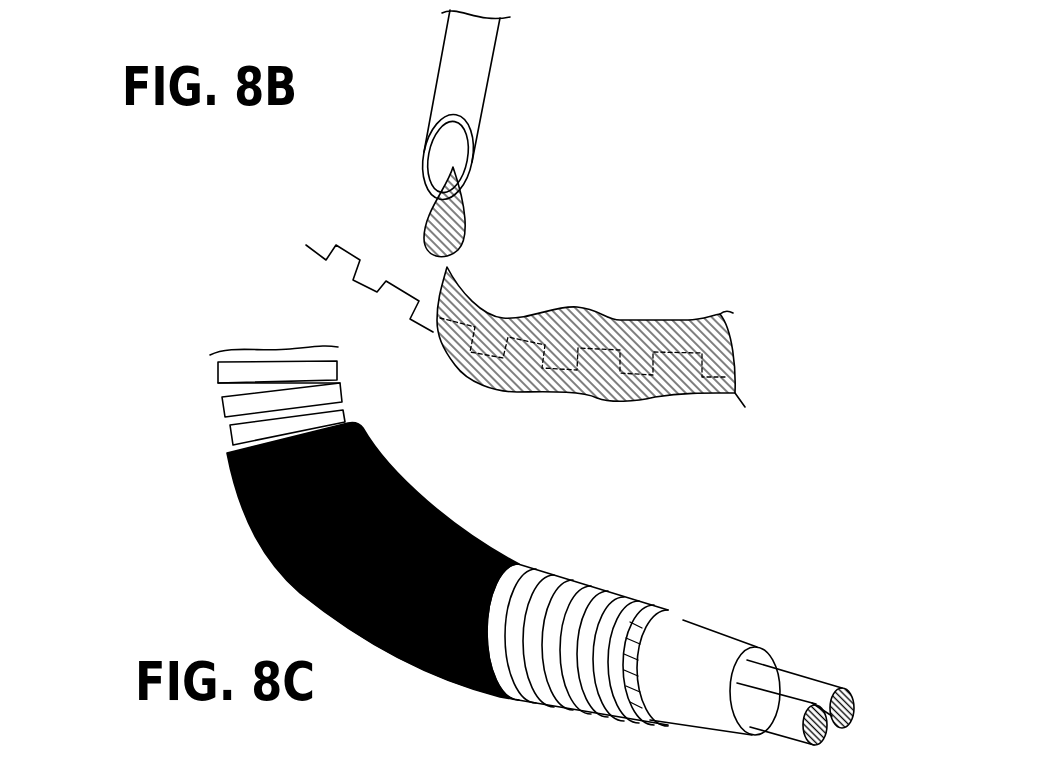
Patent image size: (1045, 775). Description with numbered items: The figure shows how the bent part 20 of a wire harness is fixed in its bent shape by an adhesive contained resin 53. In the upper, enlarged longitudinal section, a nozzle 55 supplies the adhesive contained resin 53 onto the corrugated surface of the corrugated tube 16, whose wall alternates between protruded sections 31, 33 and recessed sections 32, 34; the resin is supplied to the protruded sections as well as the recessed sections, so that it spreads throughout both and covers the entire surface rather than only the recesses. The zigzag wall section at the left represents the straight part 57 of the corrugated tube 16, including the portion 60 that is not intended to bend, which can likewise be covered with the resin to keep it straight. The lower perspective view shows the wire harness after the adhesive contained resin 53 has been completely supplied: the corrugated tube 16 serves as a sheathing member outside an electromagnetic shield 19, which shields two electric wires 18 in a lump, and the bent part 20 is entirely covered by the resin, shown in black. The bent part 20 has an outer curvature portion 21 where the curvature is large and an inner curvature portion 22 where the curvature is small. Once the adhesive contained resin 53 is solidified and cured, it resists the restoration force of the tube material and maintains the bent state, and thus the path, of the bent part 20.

In FIG. 8B, the nozzle 55 is at (467, 80).
In FIG. 8B, the straight part 57 is at (338, 227).
In FIG. 8B, the portion which is not intended to bend 60 is at (338, 227).
In FIG. 8B, the protruded section 31 is at (338, 227).
In FIG. 8B, the protruded section 33 is at (338, 227).
In FIG. 8B, the recessed section 32 is at (338, 227).
In FIG. 8B, the recessed section 34 is at (383, 280).
In FIG. 8B, the adhesive contained resin 53 is at (587, 323).
In FIG. 8C, the adhesive contained resin 53 is at (507, 553).
In FIG. 8C, the bent part 20 is at (362, 428).
In FIG. 8C, the inner curvature portion 22 is at (388, 430).
In FIG. 8C, the outer curvature portion 21 is at (364, 561).
In FIG. 8C, the corrugated tube 16 is at (530, 700).
In FIG. 8C, the electromagnetic shield 19 is at (723, 643).
In FIG. 8C, the electric wire 18 is at (813, 683).